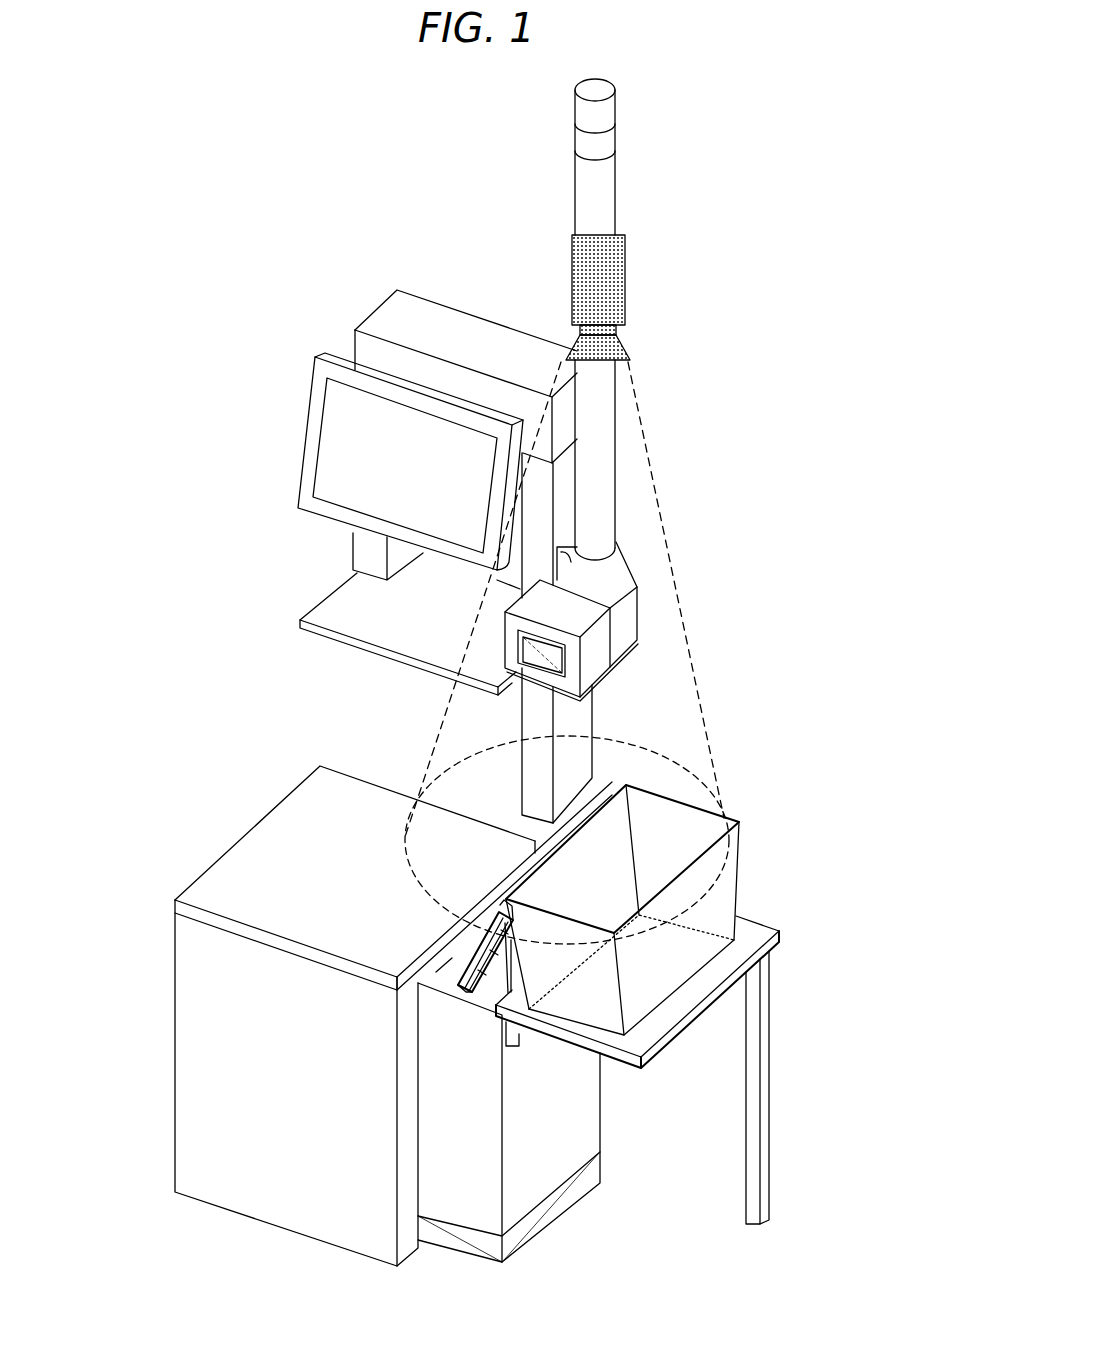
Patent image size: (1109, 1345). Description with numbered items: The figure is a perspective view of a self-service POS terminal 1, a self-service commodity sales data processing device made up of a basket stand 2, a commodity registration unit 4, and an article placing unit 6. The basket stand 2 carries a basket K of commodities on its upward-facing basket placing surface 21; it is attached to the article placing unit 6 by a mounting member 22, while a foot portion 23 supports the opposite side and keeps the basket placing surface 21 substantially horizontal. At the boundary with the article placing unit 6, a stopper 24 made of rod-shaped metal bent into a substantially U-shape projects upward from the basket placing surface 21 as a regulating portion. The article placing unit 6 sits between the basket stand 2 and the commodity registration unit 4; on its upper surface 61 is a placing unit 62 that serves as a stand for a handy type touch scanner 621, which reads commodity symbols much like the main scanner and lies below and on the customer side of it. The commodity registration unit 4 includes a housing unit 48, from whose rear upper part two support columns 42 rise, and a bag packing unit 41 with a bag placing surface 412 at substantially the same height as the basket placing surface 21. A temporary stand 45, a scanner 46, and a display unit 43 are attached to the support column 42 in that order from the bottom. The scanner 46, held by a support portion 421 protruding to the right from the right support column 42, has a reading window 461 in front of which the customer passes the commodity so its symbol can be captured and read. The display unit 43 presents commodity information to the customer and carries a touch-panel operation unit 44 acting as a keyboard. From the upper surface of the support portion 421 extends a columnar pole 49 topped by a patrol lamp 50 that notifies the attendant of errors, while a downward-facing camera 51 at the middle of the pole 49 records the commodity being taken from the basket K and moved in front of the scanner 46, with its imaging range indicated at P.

The self-service POS terminal 1 is at (784, 143).
The basket stand 2 is at (665, 1012).
The basket placing surface 21 is at (760, 930).
The mounting member 22 is at (518, 1042).
The foot portion 23 is at (770, 1062).
The stopper 24 is at (501, 998).
The commodity registration unit 4 is at (185, 1000).
The bag packing unit 41 is at (225, 872).
The bag placing surface 412 is at (285, 823).
The support column 42 is at (533, 508).
The support portion 421 is at (617, 566).
The display unit 43 is at (316, 395).
The operation unit 44 is at (328, 456).
The temporary stand 45 is at (330, 596).
The scanner 46 is at (598, 660).
The reading window 461 is at (585, 690).
The housing unit 48 is at (210, 1082).
The pole 49 is at (612, 184).
The patrol lamp 50 is at (606, 141).
The camera 51 is at (628, 263).
The article placing unit 6 is at (470, 1225).
The upper surface 61 is at (467, 952).
The placing unit 62 is at (441, 979).
The touch scanner 621 is at (473, 987).
The basket K is at (740, 855).
The imaging range P is at (725, 808).